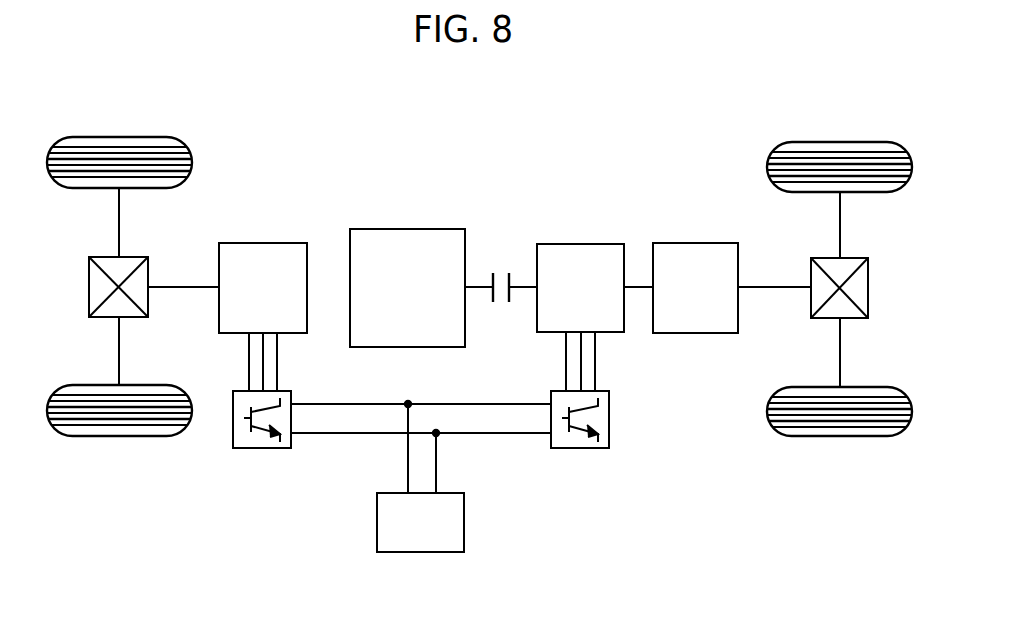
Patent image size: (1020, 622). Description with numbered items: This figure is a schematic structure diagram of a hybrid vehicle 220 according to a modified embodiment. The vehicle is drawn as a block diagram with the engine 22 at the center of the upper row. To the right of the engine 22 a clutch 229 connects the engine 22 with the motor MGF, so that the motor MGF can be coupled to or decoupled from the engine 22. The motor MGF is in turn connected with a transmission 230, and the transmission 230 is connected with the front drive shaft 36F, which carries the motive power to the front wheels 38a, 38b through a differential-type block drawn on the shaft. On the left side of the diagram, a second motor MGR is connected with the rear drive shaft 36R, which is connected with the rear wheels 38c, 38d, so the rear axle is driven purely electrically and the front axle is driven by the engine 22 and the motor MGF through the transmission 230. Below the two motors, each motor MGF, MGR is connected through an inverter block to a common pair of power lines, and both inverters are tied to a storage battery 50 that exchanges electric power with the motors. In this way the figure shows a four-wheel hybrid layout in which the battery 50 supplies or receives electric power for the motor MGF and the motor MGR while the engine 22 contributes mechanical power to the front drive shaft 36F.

The hybrid vehicle 220 is at (588, 112).
The engine 22 is at (408, 229).
The clutch 229 is at (501, 270).
The transmission 230 is at (697, 243).
The motor MGR is at (264, 242).
The motor MGF is at (581, 243).
The drive shaft 36R is at (176, 283).
The drive shaft 36F is at (769, 283).
The front wheel 38a is at (841, 142).
The front wheel 38b is at (840, 440).
The rear wheel 38c is at (121, 137).
The rear wheel 38d is at (123, 440).
The battery 50 is at (464, 522).